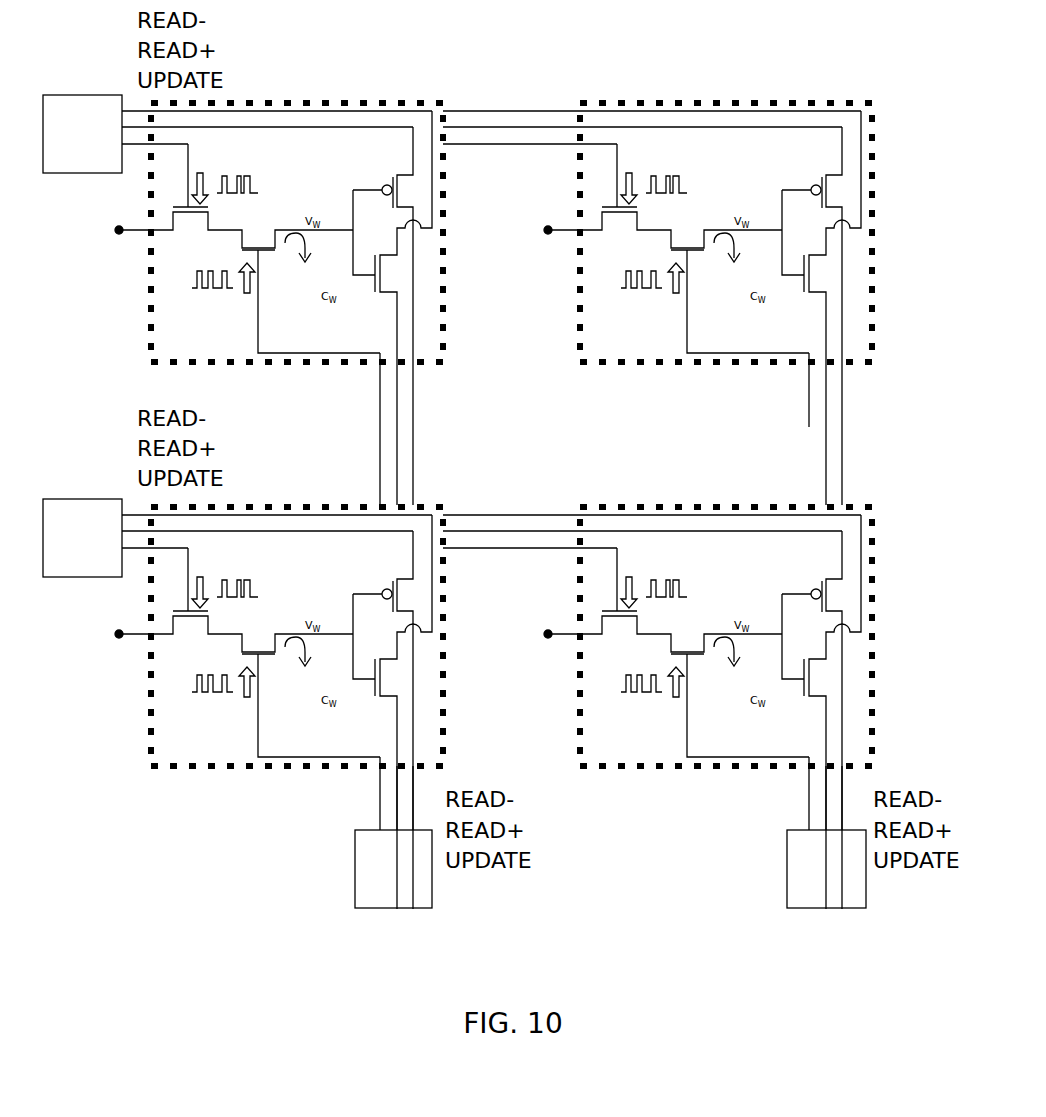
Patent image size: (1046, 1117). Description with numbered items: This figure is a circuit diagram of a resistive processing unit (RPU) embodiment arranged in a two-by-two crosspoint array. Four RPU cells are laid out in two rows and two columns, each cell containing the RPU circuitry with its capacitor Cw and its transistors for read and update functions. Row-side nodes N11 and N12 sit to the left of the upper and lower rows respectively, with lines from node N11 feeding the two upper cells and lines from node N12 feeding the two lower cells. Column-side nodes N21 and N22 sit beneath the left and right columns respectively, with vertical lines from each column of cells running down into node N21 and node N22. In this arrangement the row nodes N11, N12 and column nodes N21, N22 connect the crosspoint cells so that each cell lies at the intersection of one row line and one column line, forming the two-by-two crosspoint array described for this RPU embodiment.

The neuron node N11 is at (82, 134).
The neuron node N12 is at (82, 538).
The neuron node N21 is at (393, 869).
The neuron node N22 is at (826, 869).